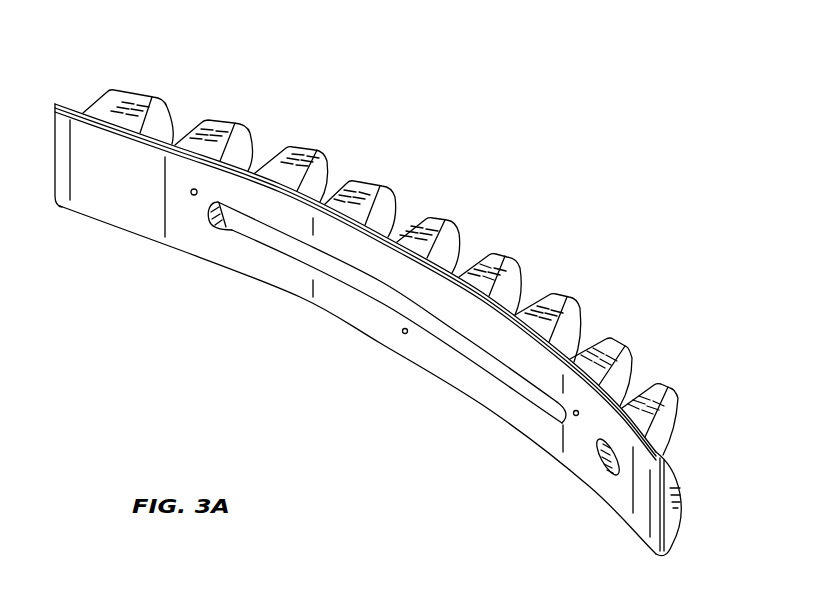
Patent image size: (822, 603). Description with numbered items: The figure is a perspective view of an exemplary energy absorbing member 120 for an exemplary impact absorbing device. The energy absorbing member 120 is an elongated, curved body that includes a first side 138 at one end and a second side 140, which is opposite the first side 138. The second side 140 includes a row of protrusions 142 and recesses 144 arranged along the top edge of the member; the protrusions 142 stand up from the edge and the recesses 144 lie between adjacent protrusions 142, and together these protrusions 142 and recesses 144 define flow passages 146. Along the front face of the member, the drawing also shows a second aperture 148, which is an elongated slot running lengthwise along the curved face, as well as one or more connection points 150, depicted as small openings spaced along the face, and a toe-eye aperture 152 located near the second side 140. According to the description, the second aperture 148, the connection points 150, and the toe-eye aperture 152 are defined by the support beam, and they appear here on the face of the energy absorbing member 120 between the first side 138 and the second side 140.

The energy absorbing member 120 is at (636, 61).
The first side 138 is at (90, 230).
The second side 140 is at (686, 462).
The protrusions 142 is at (150, 100).
The recesses 144 is at (180, 102).
The flow passages 146 is at (190, 118).
The second aperture 148 is at (462, 336).
The connection points 150 is at (193, 195).
The toe-eye aperture 152 is at (603, 462).